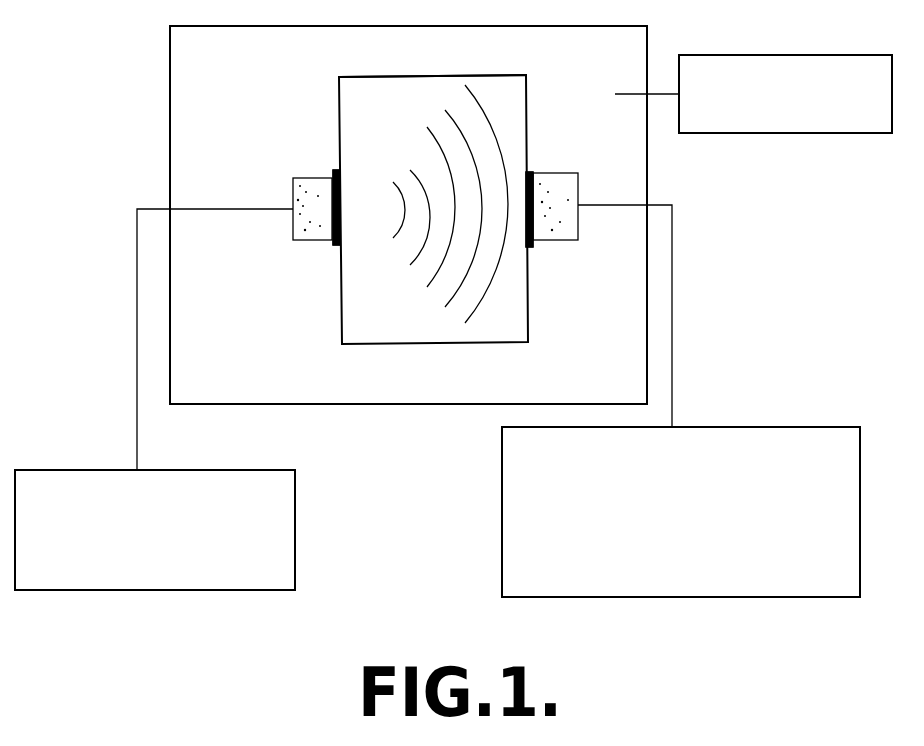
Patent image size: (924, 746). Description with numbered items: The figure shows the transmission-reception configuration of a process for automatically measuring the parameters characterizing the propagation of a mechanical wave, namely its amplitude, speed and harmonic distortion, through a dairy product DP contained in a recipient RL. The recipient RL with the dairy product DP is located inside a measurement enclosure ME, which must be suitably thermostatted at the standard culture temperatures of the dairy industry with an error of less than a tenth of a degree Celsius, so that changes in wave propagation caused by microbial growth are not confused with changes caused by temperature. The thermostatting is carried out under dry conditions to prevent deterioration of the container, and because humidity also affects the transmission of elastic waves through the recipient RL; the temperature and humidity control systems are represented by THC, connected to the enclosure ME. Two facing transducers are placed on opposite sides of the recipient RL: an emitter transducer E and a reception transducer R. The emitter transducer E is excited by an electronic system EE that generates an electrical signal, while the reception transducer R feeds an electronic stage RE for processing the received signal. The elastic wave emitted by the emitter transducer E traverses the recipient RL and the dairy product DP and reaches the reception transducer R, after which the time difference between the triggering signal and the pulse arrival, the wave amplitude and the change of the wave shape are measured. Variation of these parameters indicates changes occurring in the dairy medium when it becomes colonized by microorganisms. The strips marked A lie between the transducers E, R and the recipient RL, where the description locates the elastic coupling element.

The measurement enclosure ME is at (408, 215).
The dairy product DP is at (433, 209).
The recipient RL is at (506, 73).
The emitter transducer E is at (312, 184).
The reception transducer R is at (552, 185).
The acoustic coupling strips A is at (527, 243).
The electronic system EE is at (155, 399).
The electronic stage for the processing of the received signal RE is at (681, 401).
The temperature and humidity control system THC is at (753, 94).